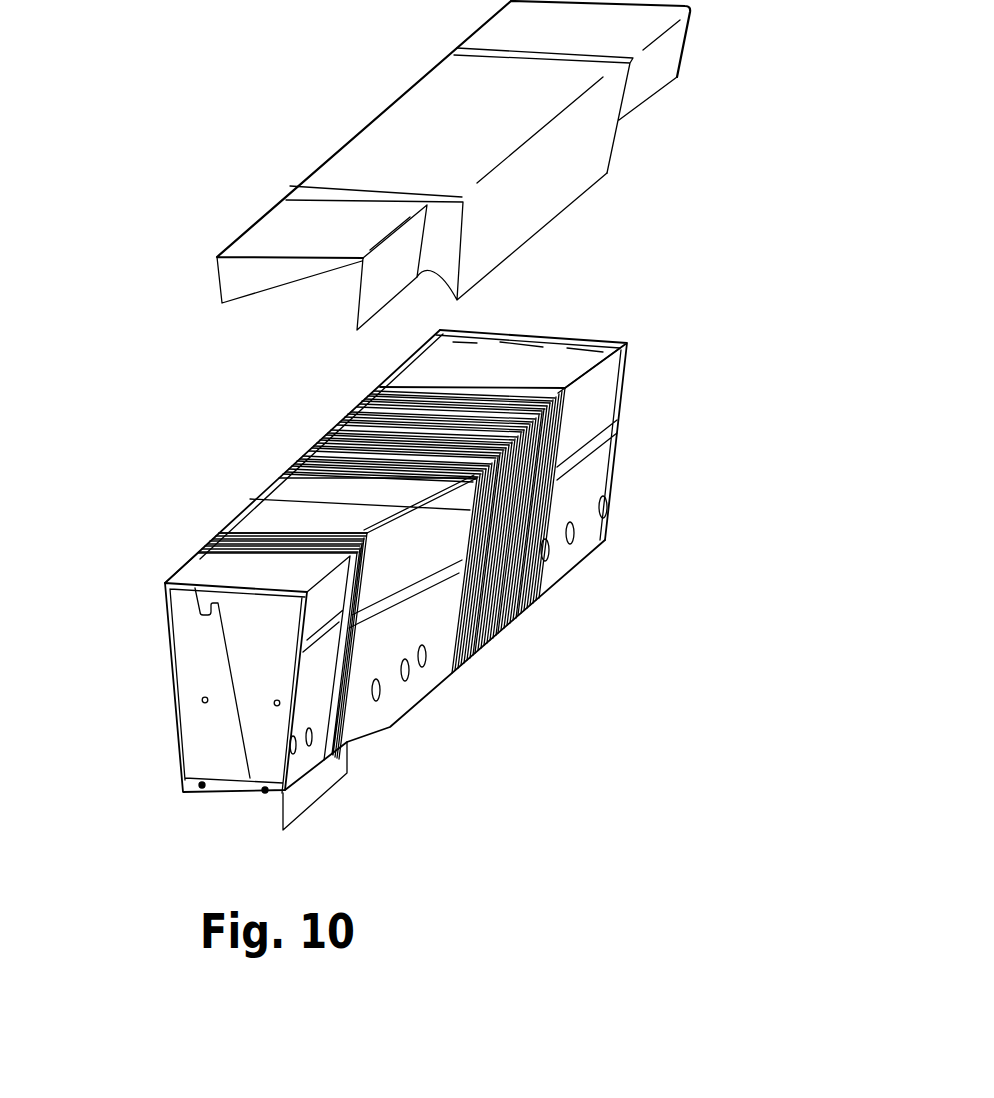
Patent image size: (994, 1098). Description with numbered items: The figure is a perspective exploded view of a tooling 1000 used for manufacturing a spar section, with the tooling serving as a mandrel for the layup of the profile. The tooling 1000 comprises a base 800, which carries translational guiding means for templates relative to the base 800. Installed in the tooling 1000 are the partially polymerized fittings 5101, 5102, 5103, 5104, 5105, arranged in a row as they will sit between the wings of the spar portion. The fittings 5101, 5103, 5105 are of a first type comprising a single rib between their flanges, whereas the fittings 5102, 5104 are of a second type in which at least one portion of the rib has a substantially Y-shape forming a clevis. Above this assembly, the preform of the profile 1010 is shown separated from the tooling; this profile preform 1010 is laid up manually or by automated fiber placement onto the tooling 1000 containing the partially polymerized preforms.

The tooling 1000 is at (204, 345).
The profile preform 1010 is at (457, 117).
The base 800 is at (240, 794).
The fitting 5101 is at (292, 536).
The fitting 5102 is at (351, 424).
The fitting 5103 is at (313, 449).
The fitting 5104 is at (378, 395).
The fitting 5105 is at (420, 388).